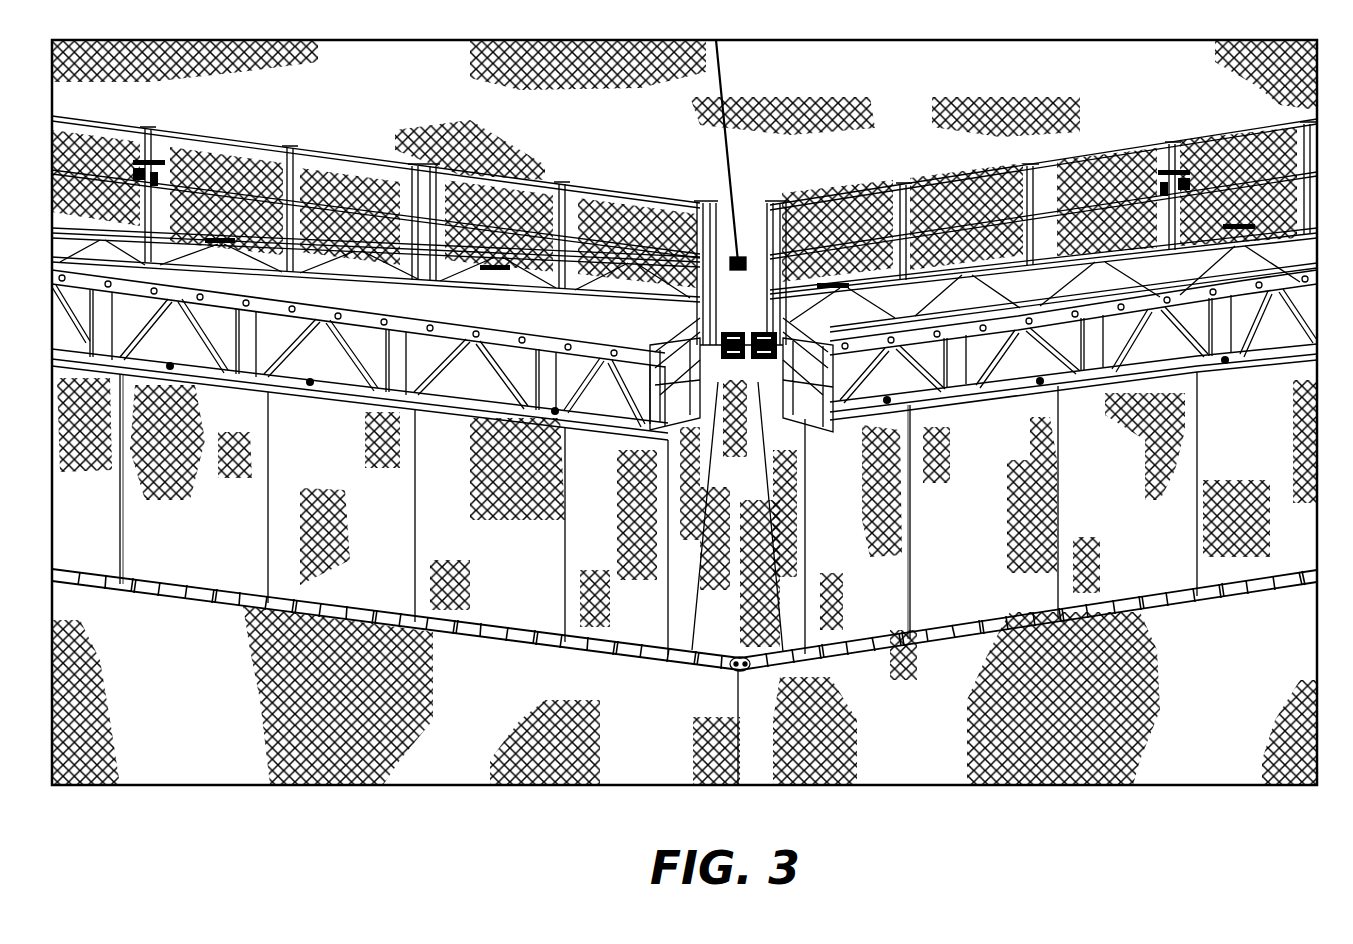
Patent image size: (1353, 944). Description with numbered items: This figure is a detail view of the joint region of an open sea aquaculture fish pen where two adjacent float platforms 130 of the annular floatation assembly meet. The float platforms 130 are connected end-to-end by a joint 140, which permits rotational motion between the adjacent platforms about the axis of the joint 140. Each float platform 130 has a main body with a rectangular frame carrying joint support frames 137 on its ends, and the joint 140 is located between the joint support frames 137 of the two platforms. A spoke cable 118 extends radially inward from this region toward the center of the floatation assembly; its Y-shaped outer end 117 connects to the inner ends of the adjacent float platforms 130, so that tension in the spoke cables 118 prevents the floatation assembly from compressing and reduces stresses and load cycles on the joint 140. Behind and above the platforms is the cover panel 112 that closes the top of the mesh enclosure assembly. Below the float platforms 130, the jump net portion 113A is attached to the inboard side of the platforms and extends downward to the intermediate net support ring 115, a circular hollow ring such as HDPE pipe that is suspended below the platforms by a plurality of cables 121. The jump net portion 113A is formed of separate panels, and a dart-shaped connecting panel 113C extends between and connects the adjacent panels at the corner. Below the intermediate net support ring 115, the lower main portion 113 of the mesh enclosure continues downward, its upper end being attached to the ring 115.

The cover panel 112 is at (226, 89).
The main portion 113 is at (349, 707).
The jump net portion 113A is at (482, 570).
The connecting panels 113C is at (705, 305).
The intermediate net support ring 115 is at (226, 606).
The Y-shaped outer end 117 is at (738, 256).
The spoke cables 118 is at (722, 82).
The cables 121 is at (275, 457).
The float platforms 130 is at (368, 148).
The joint support frames 137 is at (630, 315).
The joints 140 is at (752, 405).